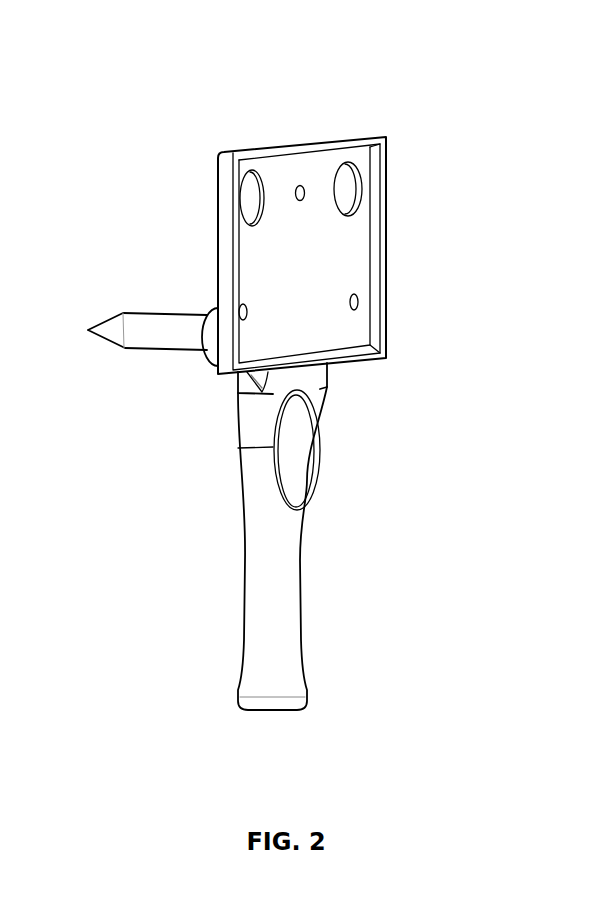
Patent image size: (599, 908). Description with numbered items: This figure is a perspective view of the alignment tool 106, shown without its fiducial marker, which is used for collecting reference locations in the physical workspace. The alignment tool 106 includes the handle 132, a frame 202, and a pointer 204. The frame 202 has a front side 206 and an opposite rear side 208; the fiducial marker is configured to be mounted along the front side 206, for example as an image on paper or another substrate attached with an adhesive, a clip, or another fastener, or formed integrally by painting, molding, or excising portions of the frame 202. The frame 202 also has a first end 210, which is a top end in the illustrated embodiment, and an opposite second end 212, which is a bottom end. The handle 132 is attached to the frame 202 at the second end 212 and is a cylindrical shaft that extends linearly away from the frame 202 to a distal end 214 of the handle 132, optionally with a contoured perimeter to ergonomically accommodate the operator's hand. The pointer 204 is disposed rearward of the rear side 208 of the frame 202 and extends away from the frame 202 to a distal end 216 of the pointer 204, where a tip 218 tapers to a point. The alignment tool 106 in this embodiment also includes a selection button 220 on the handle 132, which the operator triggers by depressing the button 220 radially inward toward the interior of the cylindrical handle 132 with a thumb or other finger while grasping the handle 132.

The alignment tool 106 is at (140, 95).
The handle 132 is at (262, 613).
The frame 202 is at (388, 163).
The pointer 204 is at (163, 325).
The front side 206 is at (373, 230).
The rear side 208 is at (217, 193).
The first end 210 is at (308, 140).
The second end 212 is at (347, 362).
The distal end 214 is at (288, 711).
The distal end 216 is at (88, 330).
The tip 218 is at (88, 327).
The selection button 220 is at (292, 473).